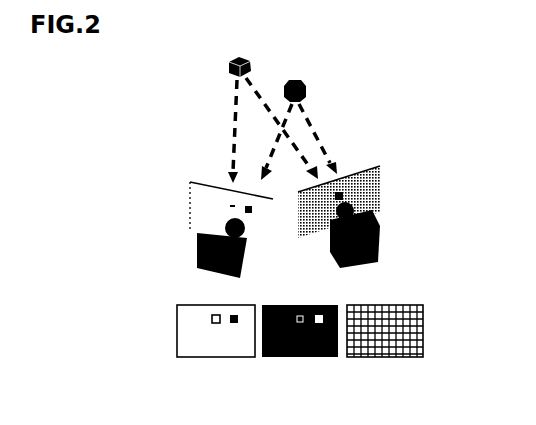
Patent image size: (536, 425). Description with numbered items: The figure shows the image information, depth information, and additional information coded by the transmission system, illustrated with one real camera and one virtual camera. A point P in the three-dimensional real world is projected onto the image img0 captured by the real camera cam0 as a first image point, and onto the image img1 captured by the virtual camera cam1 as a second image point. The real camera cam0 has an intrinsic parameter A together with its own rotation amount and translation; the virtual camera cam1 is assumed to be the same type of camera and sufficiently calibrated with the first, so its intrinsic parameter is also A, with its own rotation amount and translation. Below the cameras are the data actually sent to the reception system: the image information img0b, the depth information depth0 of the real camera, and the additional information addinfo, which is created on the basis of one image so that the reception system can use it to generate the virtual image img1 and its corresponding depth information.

The point in the 3D real world P is at (231, 71).
The image img[0] img0 is at (201, 206).
The real camera cam0 is at (173, 248).
The image img[1] img1 is at (370, 202).
The virtual camera cam1 is at (410, 235).
The image information img[0] img0b is at (216, 346).
The depth information depth[0] depth0 is at (300, 346).
The additional information addinfo is at (393, 358).